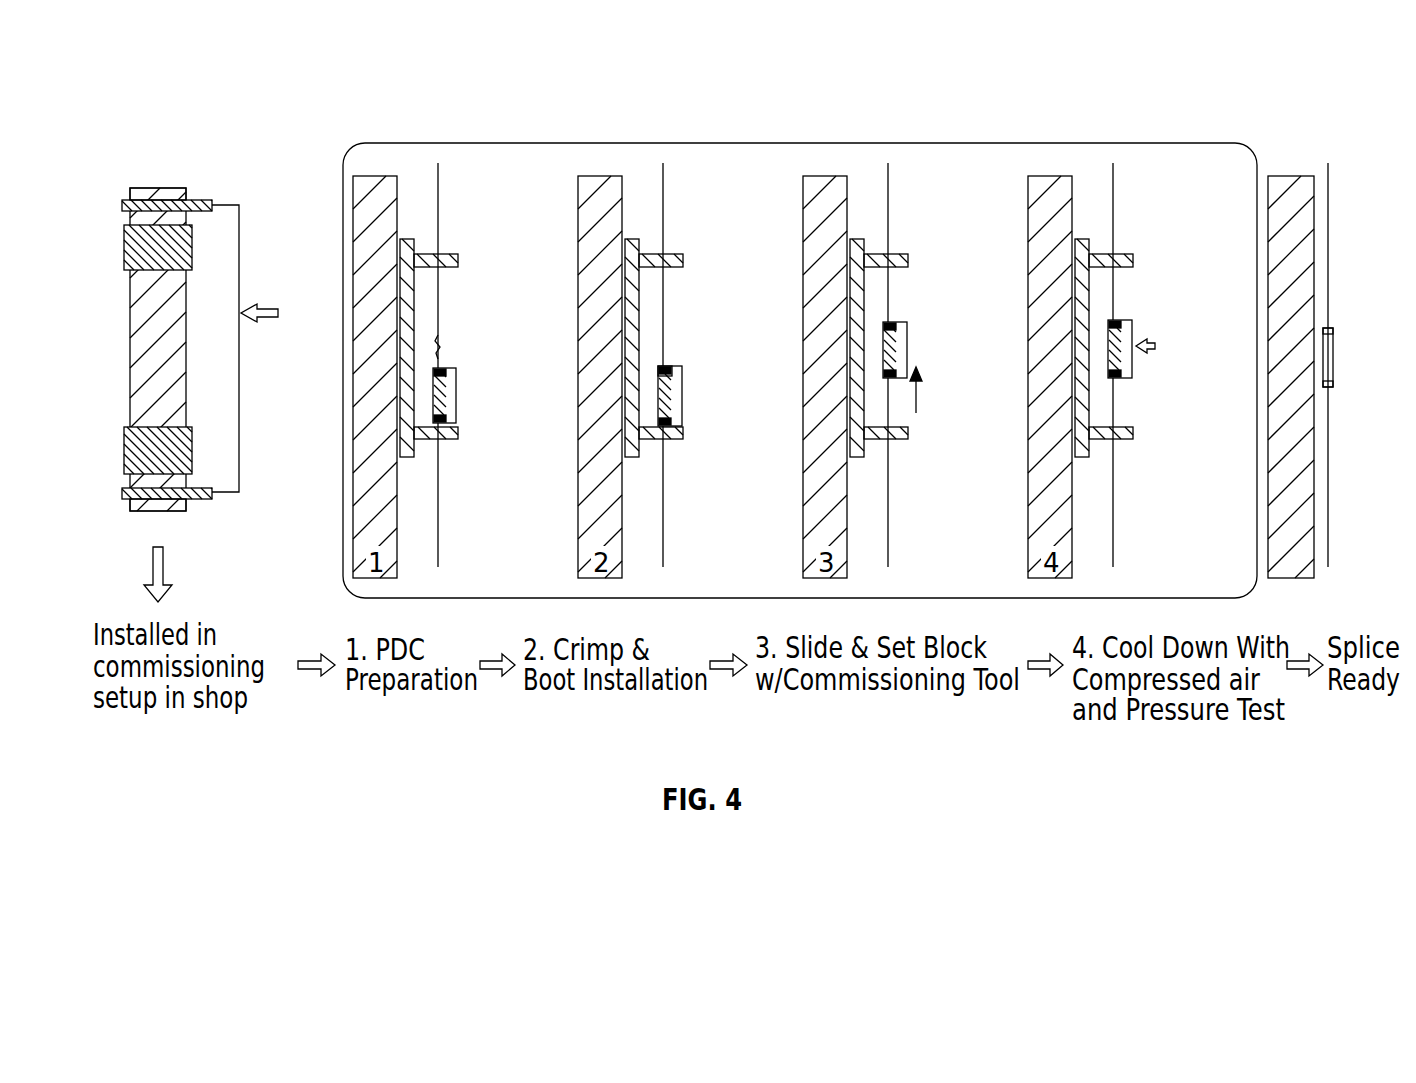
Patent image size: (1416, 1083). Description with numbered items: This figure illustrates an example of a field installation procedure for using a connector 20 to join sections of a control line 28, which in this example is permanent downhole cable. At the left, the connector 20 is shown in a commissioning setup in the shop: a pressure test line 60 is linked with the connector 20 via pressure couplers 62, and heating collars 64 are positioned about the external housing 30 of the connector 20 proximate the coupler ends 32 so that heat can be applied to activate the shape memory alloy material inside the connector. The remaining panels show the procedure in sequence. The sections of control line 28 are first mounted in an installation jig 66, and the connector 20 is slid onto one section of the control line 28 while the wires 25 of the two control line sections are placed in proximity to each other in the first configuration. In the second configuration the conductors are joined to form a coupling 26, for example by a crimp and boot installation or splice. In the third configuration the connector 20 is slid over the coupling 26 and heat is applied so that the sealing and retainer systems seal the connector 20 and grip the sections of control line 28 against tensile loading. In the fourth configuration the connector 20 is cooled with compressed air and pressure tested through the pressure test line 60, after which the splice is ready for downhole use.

The connector 20 is at (108, 403).
The wires 25 is at (450, 350).
The coupling 26 is at (677, 361).
The control line 28 is at (440, 218).
The external housing 30 is at (128, 353).
The coupler ends 32 is at (128, 196).
The pressure test line 60 is at (240, 287).
The pressure couplers 62 is at (198, 200).
The heating collars 64 is at (121, 232).
The installation jig 66 is at (458, 256).